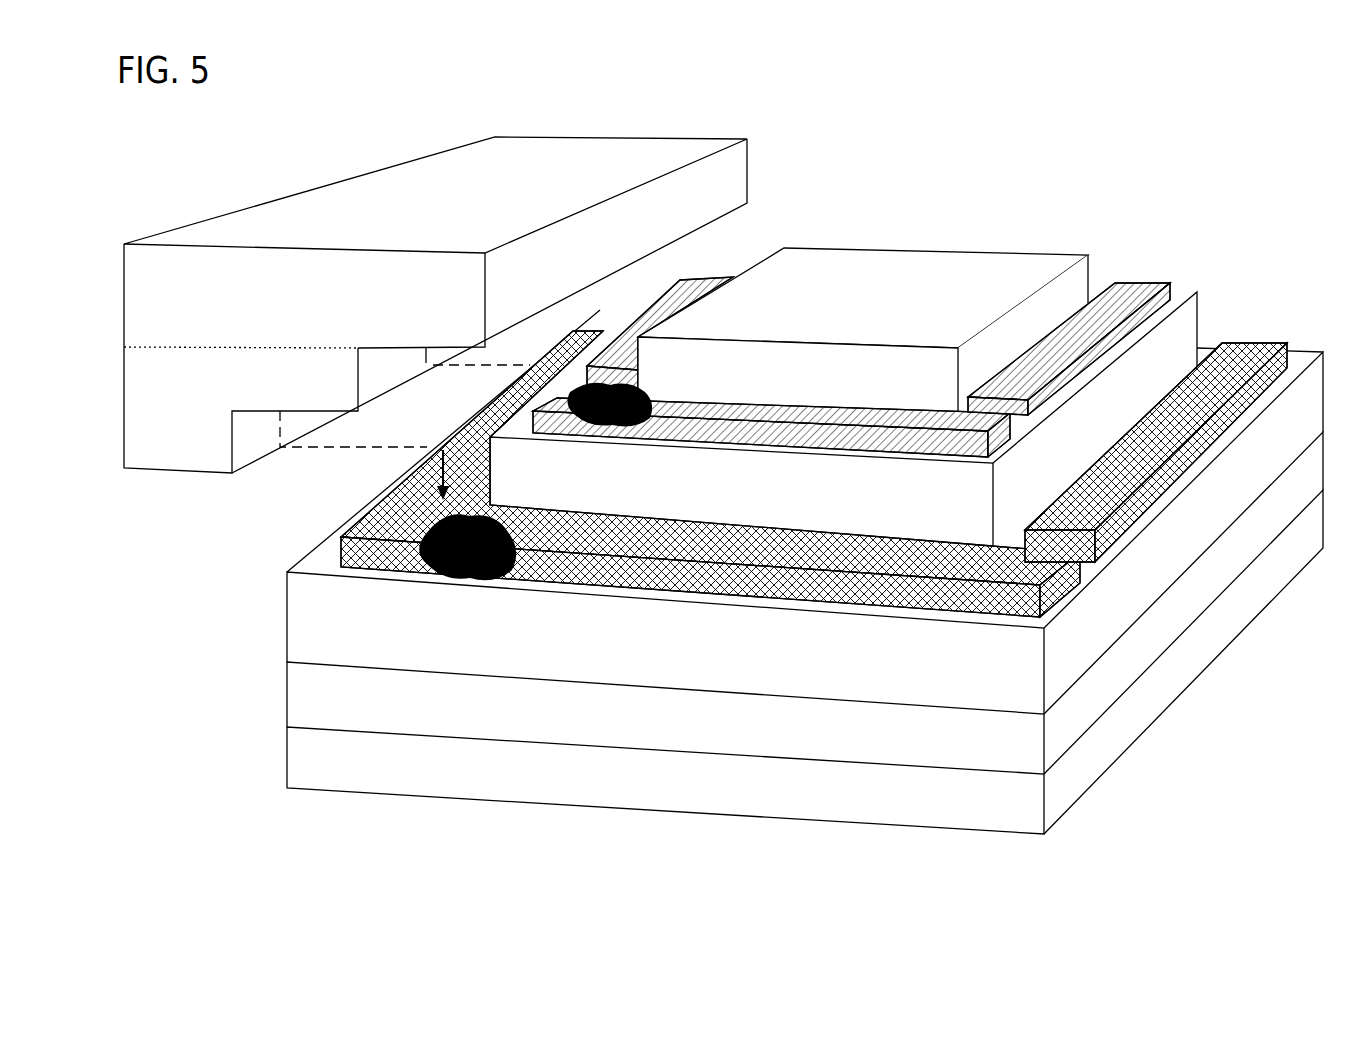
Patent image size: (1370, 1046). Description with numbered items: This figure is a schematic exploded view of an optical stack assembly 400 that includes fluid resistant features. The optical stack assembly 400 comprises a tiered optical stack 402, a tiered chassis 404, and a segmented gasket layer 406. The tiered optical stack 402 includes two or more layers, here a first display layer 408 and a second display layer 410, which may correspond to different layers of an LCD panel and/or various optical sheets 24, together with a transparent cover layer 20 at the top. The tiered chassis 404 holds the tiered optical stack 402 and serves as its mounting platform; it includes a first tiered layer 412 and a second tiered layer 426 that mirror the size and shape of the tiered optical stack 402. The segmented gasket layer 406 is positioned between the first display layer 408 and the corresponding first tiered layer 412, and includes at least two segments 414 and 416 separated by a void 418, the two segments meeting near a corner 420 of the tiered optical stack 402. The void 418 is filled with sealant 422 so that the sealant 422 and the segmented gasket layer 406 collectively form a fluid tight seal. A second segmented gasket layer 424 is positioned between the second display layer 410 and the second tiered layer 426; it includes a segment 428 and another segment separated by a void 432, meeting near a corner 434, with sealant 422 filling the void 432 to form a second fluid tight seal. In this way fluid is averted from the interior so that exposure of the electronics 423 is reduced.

The optical stack assembly 400 is at (1238, 114).
The tiered optical stack 402 is at (946, 195).
The tiered chassis 404 is at (291, 175).
The segmented gasket layer 406 is at (1161, 256).
The first display layer 408 is at (843, 426).
The second display layer 410 is at (805, 530).
The first tiered layer 412 is at (400, 316).
The segment 414 is at (881, 432).
The segment 416 is at (699, 285).
The void 418 is at (606, 450).
The corner 420 is at (500, 445).
The sealant 422 is at (591, 416).
The electronics 423 is at (638, 796).
The second segmented gasket layer 424 is at (1262, 306).
The second tiered layer 426 is at (270, 384).
The segment 428 is at (357, 501).
The void 432 is at (461, 594).
The corner 434 is at (304, 592).
The transparent cover layer 20 is at (783, 379).
The optical sheets 24 is at (643, 729).